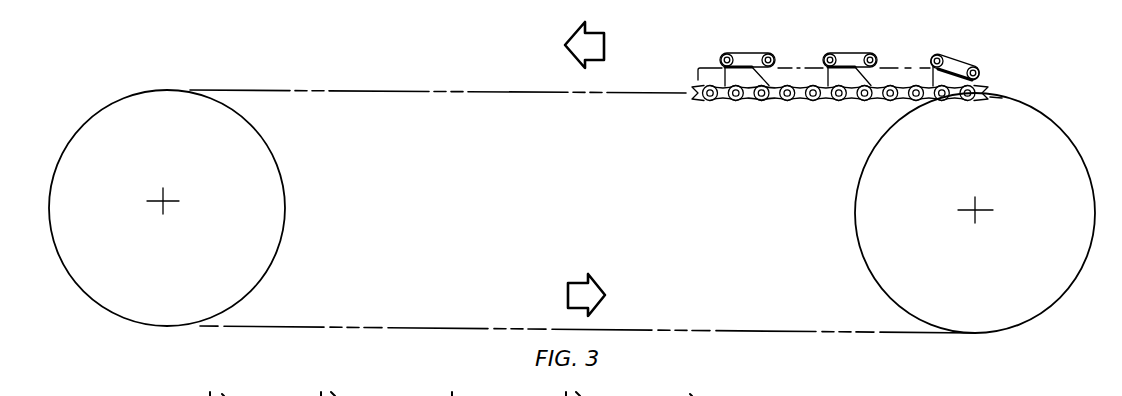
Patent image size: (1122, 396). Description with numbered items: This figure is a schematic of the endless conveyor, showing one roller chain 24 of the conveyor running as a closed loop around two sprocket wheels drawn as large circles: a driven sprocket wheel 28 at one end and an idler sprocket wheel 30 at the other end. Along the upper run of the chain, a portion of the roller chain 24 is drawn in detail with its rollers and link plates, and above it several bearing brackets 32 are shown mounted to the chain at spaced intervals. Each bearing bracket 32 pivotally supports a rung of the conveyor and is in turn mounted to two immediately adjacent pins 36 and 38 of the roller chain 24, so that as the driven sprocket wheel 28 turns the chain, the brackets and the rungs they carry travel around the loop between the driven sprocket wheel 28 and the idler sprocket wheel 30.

The roller chain 24 is at (820, 140).
The driven sprocket wheel 28 is at (138, 135).
The idler sprocket wheel 30 is at (1035, 158).
The bearing bracket 32 is at (720, 66).
The pin 36 is at (772, 103).
The pin 38 is at (741, 102).